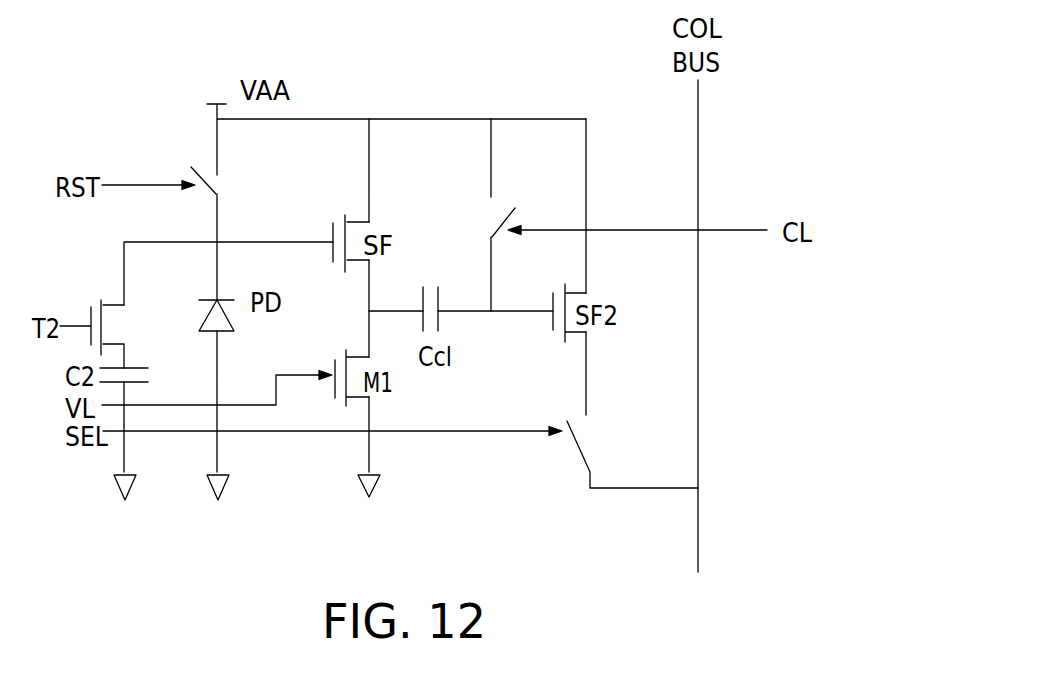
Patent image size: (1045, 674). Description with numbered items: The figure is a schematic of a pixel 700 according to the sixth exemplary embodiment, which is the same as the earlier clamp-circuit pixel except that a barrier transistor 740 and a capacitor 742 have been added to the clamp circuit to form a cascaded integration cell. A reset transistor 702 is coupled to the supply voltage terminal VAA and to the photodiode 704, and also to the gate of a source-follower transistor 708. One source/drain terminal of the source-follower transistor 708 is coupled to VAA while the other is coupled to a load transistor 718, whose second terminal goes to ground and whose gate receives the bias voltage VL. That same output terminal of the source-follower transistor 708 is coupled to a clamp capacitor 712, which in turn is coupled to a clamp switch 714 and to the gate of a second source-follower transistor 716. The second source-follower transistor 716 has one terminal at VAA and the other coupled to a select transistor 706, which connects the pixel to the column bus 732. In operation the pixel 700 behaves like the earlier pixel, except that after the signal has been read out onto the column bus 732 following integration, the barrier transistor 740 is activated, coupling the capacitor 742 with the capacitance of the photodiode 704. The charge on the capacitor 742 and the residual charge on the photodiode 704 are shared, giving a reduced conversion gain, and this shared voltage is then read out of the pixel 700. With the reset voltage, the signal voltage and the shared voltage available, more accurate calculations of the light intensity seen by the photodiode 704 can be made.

The pixel 700 is at (483, 57).
The reset transistor 702 is at (236, 178).
The photodiode 704 is at (205, 322).
The select transistor 706 is at (609, 420).
The source-follower transistor 708 is at (393, 215).
The clamp capacitor 712 is at (421, 268).
The clamp switch 714 is at (508, 197).
The second source-follower transistor 716 is at (609, 284).
The load transistor 718 is at (393, 405).
The column bus 732 is at (700, 181).
The barrier transistor 740 is at (140, 349).
The capacitor 742 is at (148, 377).